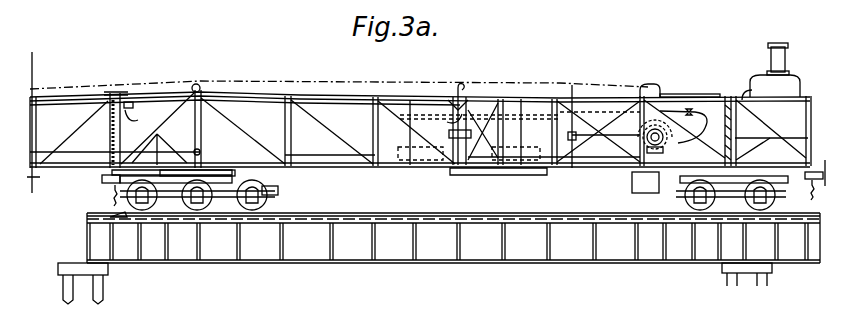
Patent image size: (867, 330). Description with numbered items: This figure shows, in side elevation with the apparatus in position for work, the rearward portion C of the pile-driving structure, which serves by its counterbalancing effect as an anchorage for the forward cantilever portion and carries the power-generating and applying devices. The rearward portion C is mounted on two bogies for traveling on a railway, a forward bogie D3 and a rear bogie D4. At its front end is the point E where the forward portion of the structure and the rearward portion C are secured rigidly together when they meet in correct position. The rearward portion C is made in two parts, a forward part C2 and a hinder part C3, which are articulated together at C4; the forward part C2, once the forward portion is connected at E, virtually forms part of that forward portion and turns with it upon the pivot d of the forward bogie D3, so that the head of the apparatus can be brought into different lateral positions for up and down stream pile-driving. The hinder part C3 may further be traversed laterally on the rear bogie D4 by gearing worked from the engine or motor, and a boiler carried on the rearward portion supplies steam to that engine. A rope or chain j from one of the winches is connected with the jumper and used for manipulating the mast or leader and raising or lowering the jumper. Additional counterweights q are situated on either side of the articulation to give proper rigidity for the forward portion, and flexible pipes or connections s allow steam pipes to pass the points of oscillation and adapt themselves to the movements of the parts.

The rearward portion C is at (419, 122).
The connection point E is at (119, 93).
The pivot d is at (197, 115).
The rope or chain j is at (257, 81).
The flexible pipes or connections s is at (293, 116).
The additional counterweights q is at (400, 148).
The articulation C4 is at (463, 114).
The hinder part of rearward portion C3 is at (720, 93).
The forward part of rearward portion C2 is at (652, 132).
The forward bogie D3 is at (270, 194).
The rear bogie D4 is at (722, 197).